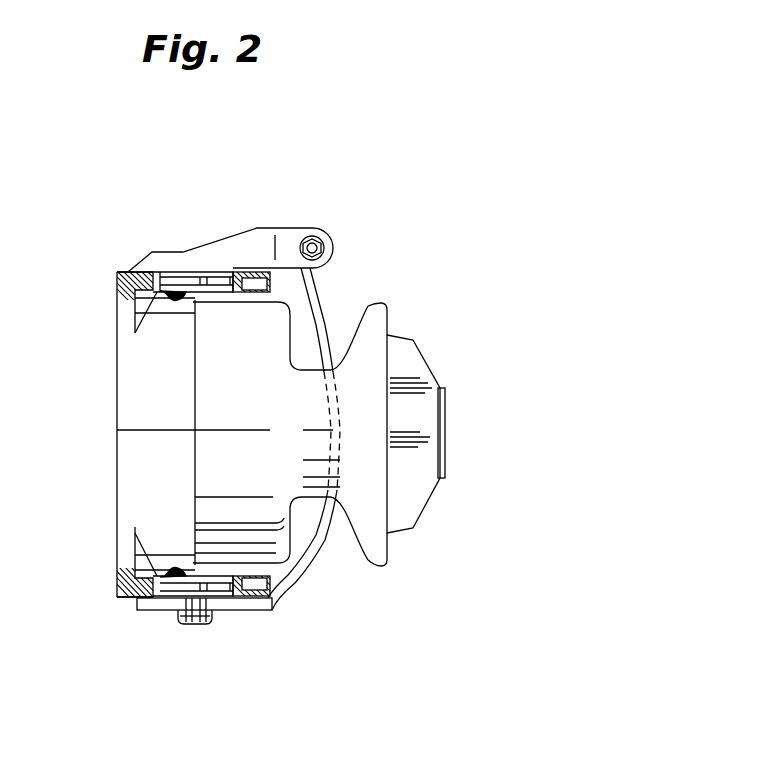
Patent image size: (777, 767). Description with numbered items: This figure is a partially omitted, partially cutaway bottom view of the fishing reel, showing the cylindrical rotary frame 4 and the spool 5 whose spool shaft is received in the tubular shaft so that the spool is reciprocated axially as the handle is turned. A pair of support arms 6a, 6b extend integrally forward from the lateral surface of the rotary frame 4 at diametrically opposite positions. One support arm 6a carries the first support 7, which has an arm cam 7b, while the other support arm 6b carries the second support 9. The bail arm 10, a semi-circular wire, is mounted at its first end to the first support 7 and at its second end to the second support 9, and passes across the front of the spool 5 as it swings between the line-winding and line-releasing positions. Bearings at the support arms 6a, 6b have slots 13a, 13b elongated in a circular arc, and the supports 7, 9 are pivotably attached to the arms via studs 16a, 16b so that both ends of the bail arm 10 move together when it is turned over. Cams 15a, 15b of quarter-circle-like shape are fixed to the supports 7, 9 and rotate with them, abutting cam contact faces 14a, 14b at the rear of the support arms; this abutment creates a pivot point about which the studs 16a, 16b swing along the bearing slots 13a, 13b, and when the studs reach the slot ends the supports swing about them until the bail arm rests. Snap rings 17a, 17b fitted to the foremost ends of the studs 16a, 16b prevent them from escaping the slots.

The rotary frame 4 is at (117, 468).
The spool 5 is at (380, 318).
The support arm 6a is at (133, 268).
The support arm 6b is at (133, 606).
The first support 7 is at (276, 224).
The arm cam 7b is at (240, 238).
The second support 9 is at (168, 616).
The bail arm 10 is at (318, 300).
The bearing slot 13a is at (216, 288).
The bearing slot 13b is at (243, 600).
The cam contact face 14a is at (167, 270).
The cam contact face 14b is at (165, 600).
The cam 15a is at (198, 276).
The cam 15b is at (200, 610).
The stud 16a is at (178, 294).
The stud 16b is at (177, 570).
The snap ring 17a is at (135, 333).
The snap ring 17b is at (135, 527).